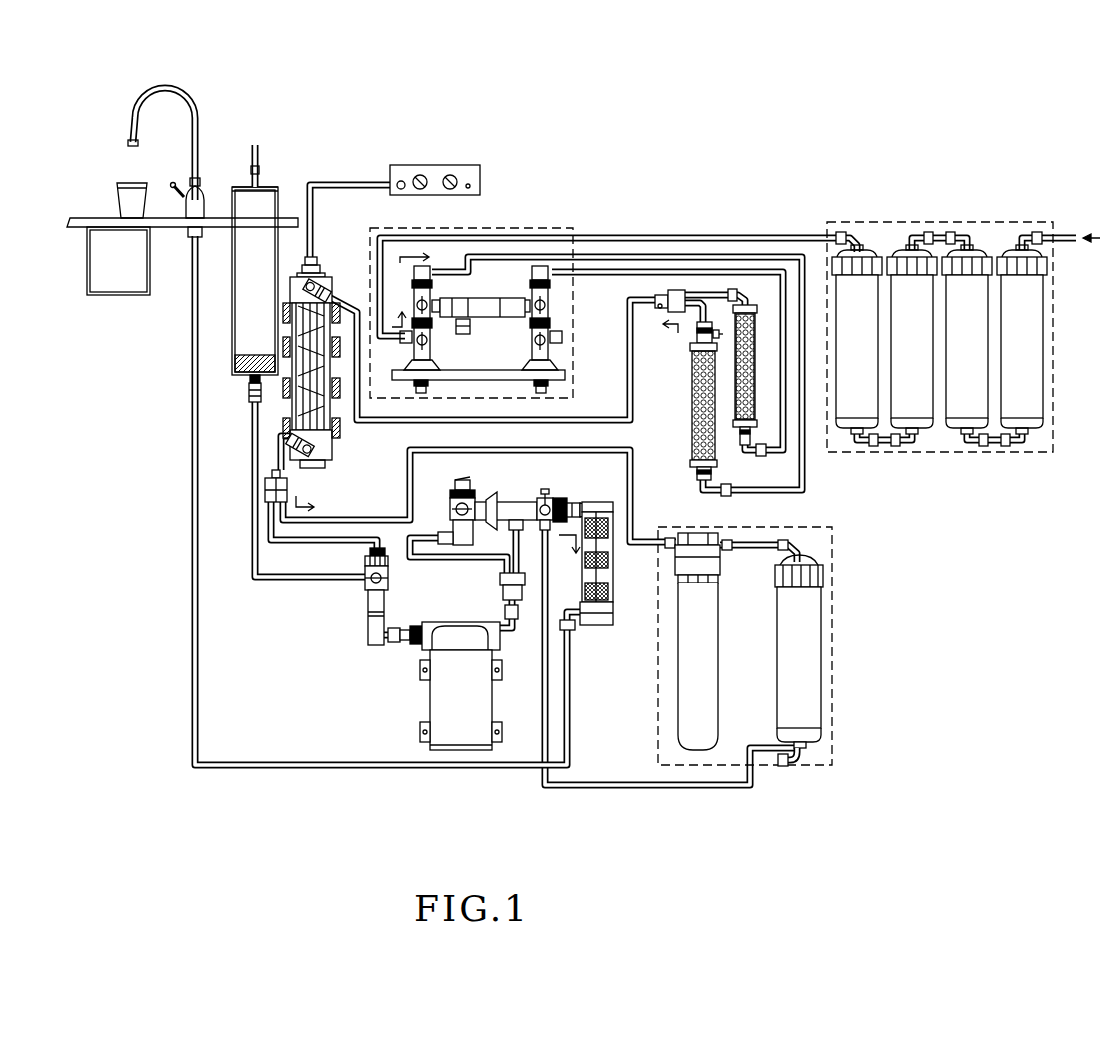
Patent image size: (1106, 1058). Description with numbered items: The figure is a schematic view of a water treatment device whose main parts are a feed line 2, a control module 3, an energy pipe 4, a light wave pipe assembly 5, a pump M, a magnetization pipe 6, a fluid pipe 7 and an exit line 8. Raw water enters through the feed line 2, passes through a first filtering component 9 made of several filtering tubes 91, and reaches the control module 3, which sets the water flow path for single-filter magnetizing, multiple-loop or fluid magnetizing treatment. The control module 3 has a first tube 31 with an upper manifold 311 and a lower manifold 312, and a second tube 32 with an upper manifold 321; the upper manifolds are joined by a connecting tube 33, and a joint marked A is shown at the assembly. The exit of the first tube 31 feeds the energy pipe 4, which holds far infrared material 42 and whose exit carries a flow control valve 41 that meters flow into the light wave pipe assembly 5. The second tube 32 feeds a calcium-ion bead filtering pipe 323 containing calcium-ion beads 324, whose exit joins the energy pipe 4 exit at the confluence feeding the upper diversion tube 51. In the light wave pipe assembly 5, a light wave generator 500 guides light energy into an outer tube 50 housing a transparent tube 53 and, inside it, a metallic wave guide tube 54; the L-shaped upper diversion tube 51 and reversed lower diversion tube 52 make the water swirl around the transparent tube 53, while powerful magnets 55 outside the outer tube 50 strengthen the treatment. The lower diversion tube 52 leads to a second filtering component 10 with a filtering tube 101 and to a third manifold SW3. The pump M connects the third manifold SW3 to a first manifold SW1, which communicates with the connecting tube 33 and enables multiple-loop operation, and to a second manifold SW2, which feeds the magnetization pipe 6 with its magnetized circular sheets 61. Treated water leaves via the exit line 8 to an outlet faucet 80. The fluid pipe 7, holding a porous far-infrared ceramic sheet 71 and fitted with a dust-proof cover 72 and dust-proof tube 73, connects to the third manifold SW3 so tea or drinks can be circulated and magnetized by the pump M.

The feed line 2 is at (1062, 232).
The control module 3 is at (502, 330).
The first tube 31 is at (467, 297).
The upper manifold 311 is at (432, 305).
The lower manifold 312 is at (414, 340).
The second tube 32 is at (577, 284).
The upper manifold 321 is at (553, 307).
The connecting tube 33 is at (511, 298).
The connection joint A is at (462, 404).
The energy pipe 4 is at (688, 409).
The flow control valve 41 is at (695, 333).
The far infrared material 42 is at (786, 401).
The calcium-ion bead filtering pipe 323 is at (757, 380).
The calcium-ion beads 324 is at (752, 400).
The light wave pipe assembly 5 is at (304, 354).
The outer tube 50 is at (290, 413).
The upper diversion tube 51 is at (328, 290).
The lower diversion tube 52 is at (305, 450).
The transparent tube 53 is at (312, 430).
The wave guide tube 54 is at (320, 413).
The powerful magnets 55 is at (283, 398).
The magnetization pipe 6 is at (607, 569).
The magnetized circular sheets 61 is at (614, 582).
The fluid pipe 7 is at (262, 241).
The porous far-infrared ceramic sheet 71 is at (243, 358).
The dust-proof cover 72 is at (274, 187).
The dust-proof tube 73 is at (260, 150).
The exit line 8 is at (191, 541).
The outlet faucet 80 is at (185, 110).
The first filtering component 9 is at (966, 311).
The filtering tube 91 is at (1037, 315).
The second filtering component 10 is at (776, 646).
The filtering tube 101 is at (812, 612).
The light wave generator 500 is at (432, 165).
The first manifold SW1 is at (470, 505).
The second manifold SW2 is at (548, 500).
The third manifold SW3 is at (389, 577).
The pump M is at (423, 703).